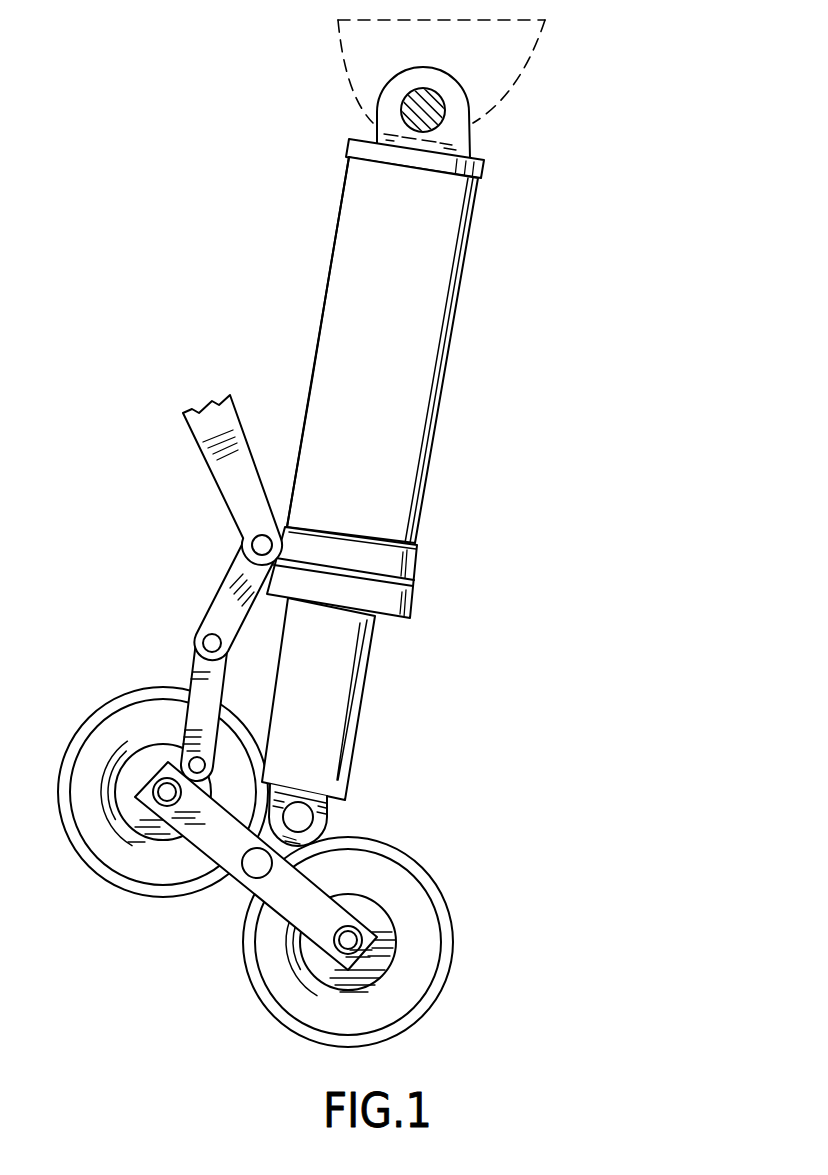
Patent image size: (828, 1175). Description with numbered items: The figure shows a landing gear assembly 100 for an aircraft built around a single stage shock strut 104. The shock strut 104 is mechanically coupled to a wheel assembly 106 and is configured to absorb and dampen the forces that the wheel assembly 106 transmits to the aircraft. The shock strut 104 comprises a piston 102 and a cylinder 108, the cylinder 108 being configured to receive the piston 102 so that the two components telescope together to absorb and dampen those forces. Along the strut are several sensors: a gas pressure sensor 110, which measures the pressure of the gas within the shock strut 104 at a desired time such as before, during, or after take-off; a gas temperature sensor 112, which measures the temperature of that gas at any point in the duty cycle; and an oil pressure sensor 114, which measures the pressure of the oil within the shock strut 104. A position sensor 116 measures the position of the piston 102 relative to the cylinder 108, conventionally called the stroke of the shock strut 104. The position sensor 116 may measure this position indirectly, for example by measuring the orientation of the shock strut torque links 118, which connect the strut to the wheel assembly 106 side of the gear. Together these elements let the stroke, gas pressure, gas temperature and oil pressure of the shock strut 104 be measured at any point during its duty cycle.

The landing gear assembly 100 is at (574, 174).
The piston 102 is at (345, 738).
The shock strut 104 is at (465, 263).
The wheel assembly 106 is at (433, 892).
The cylinder 108 is at (405, 447).
The gas pressure sensor 110 is at (343, 196).
The gas temperature sensor 112 is at (347, 255).
The oil pressure sensor 114 is at (335, 320).
The position sensor 116 is at (377, 623).
The shock strut torque links 118 is at (200, 640).